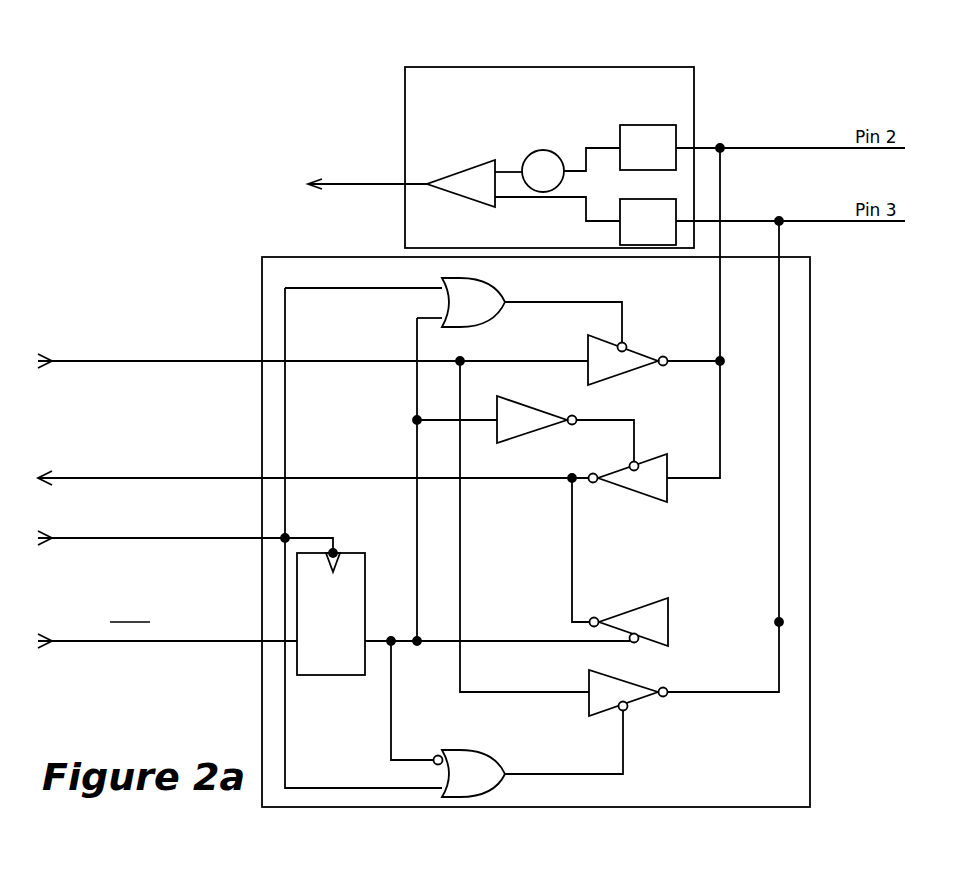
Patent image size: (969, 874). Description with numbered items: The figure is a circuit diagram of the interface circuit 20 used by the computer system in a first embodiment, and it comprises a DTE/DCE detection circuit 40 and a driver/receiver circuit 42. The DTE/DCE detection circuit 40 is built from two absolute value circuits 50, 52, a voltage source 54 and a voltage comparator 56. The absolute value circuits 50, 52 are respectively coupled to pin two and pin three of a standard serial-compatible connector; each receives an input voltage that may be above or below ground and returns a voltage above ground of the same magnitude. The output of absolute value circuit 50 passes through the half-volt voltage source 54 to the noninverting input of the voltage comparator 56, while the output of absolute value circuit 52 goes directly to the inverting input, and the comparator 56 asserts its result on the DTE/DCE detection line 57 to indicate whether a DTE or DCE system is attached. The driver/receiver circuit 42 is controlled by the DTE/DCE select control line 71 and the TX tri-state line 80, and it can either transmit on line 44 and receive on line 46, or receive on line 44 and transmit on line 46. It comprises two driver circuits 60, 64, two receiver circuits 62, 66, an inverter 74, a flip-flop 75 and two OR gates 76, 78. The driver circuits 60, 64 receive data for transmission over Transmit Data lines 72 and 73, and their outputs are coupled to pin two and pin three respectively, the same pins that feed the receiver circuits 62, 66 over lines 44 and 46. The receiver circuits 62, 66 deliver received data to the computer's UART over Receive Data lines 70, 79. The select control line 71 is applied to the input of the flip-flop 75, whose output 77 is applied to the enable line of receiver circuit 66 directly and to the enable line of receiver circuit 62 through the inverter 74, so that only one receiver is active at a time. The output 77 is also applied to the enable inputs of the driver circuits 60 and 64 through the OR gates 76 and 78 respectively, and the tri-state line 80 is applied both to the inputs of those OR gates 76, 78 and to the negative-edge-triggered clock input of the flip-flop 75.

The interface circuit 20 is at (756, 63).
The DTE/DCE detection circuit 40 is at (405, 80).
The driver/receiver circuit 42 is at (812, 590).
The line 44 is at (720, 316).
The line 46 is at (779, 360).
The absolute value circuit 50 is at (648, 125).
The absolute value circuit 52 is at (620, 232).
The voltage source 54 is at (536, 152).
The voltage comparator 56 is at (464, 172).
The DTE/DCE detection line 57 is at (340, 184).
The driver circuit 60 is at (642, 348).
The receiver circuit 62 is at (643, 497).
The driver circuit 64 is at (640, 702).
The receiver circuit 66 is at (637, 606).
The Receive Data (RD) line 70 is at (585, 476).
The DTE/DCE select control line 71 is at (207, 643).
The Transmit Data (TD) line 72 is at (495, 360).
The Transmit Data (TD) line 73 is at (478, 692).
The inverter 74 is at (530, 398).
The flip-flop 75 is at (346, 553).
The OR gate 76 is at (472, 275).
The output 77 is at (370, 640).
The OR gate 78 is at (468, 752).
The Receive Data (RD) line 79 is at (566, 533).
The TX tri-state line 80 is at (190, 540).